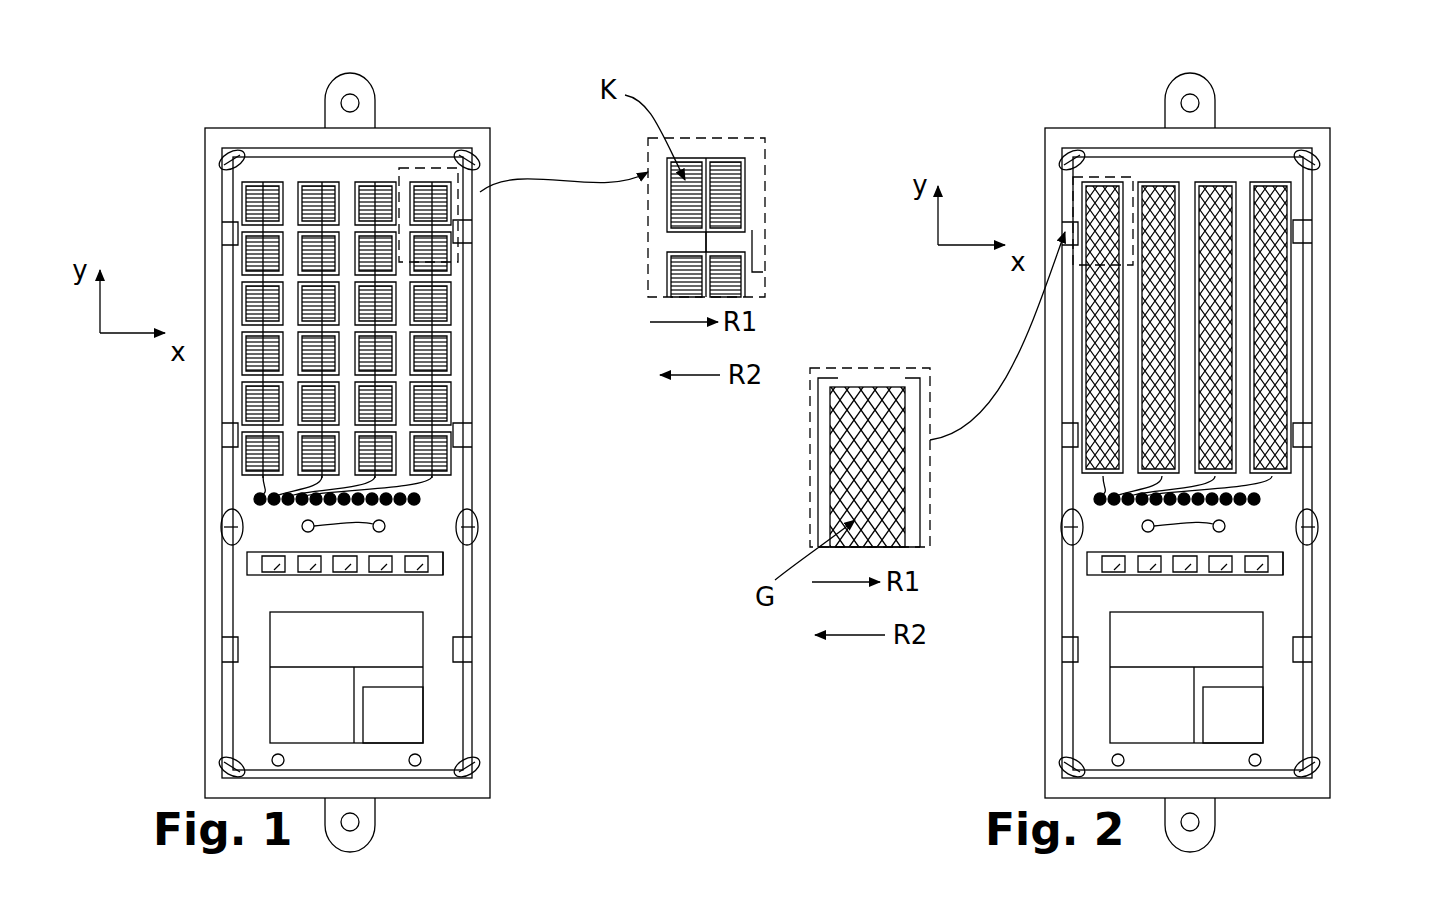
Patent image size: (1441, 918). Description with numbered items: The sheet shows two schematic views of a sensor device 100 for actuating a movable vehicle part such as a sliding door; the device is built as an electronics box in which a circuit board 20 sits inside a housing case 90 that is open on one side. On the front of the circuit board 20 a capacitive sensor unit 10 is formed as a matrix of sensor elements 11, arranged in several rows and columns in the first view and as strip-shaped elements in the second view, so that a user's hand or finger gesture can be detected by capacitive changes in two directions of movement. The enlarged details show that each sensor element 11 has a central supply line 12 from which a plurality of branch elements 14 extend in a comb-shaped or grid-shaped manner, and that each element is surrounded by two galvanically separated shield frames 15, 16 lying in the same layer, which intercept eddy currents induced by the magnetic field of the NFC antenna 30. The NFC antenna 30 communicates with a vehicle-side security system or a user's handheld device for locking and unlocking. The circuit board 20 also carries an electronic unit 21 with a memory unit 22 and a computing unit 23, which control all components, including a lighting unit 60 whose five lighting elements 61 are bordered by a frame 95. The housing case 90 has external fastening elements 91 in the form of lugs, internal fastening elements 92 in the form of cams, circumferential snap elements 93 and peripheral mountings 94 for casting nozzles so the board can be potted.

In FIG. 1, the sensor device 100 is at (165, 125).
In FIG. 2, the sensor device 100 is at (1159, 446).
In FIG. 1, the capacitive sensor unit 10 is at (235, 205).
In FIG. 2, the capacitive sensor unit 10 is at (1130, 456).
In FIG. 1, the sensor elements 11 is at (432, 182).
In FIG. 2, the sensor elements 11 is at (1084, 279).
In FIG. 1, the supply line 12 is at (428, 428).
In FIG. 2, the supply line 12 is at (1110, 497).
In FIG. 1, the branch elements 14 is at (737, 178).
In FIG. 2, the branch elements 14 is at (821, 467).
In FIG. 1, the shield frame 15 is at (668, 165).
In FIG. 2, the shield frame 15 is at (798, 438).
In FIG. 1, the shield frame 16 is at (712, 160).
In FIG. 2, the shield frame 16 is at (943, 438).
In FIG. 1, the circuit board 20 is at (452, 598).
In FIG. 2, the circuit board 20 is at (1256, 642).
In FIG. 1, the electronic unit 21 is at (400, 640).
In FIG. 2, the electronic unit 21 is at (1261, 639).
In FIG. 1, the memory unit 22 is at (327, 680).
In FIG. 2, the memory unit 22 is at (1287, 704).
In FIG. 1, the computing unit 23 is at (385, 718).
In FIG. 2, the computing unit 23 is at (1305, 715).
In FIG. 1, the NFC antenna 30 is at (470, 614).
In FIG. 2, the NFC antenna 30 is at (1244, 463).
In FIG. 1, the lighting unit 60 is at (250, 562).
In FIG. 2, the lighting unit 60 is at (1117, 557).
In FIG. 1, the lighting elements 61 is at (412, 572).
In FIG. 2, the lighting elements 61 is at (1109, 589).
In FIG. 1, the housing case 90 is at (212, 758).
In FIG. 2, the housing case 90 is at (1129, 463).
In FIG. 1, the external fastening elements 91 is at (335, 100).
In FIG. 2, the external fastening elements 91 is at (1207, 458).
In FIG. 1, the internal fastening elements 92 is at (385, 526).
In FIG. 2, the internal fastening elements 92 is at (1260, 477).
In FIG. 1, the snap elements 93 is at (235, 435).
In FIG. 2, the snap elements 93 is at (1184, 457).
In FIG. 1, the mounting for casting nozzles 94 is at (470, 162).
In FIG. 2, the mounting for casting nozzles 94 is at (1179, 452).
In FIG. 1, the frame 95 is at (445, 562).
In FIG. 2, the frame 95 is at (1356, 543).